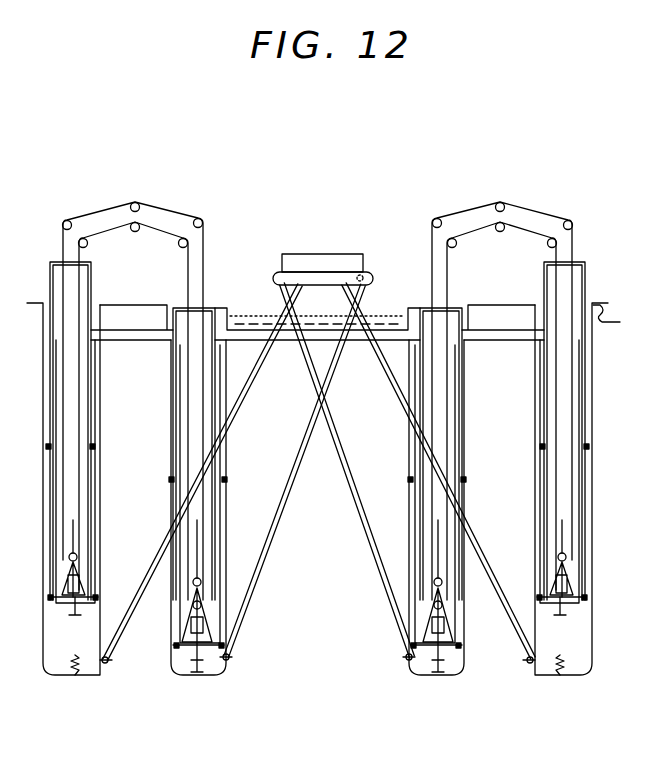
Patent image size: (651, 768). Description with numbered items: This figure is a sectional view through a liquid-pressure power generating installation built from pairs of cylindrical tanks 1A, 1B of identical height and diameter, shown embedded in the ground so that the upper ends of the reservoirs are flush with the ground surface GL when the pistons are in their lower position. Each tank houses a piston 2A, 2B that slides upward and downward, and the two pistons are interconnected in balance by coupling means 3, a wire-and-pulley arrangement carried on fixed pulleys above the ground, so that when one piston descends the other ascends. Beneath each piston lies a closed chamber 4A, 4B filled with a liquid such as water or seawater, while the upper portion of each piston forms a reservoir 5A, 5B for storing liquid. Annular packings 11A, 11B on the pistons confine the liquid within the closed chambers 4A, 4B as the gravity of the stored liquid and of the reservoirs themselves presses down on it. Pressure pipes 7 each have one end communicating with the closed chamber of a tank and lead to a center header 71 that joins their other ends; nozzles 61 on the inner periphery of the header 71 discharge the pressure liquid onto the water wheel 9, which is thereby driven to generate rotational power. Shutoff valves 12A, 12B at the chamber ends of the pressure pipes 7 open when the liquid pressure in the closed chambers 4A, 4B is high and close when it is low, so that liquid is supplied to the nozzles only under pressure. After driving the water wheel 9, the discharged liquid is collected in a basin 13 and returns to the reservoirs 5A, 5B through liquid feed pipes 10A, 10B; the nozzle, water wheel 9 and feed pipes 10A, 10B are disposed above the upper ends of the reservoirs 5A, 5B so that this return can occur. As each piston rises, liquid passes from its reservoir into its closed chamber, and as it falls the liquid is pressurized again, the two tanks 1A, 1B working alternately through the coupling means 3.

The coupling means 3 is at (140, 200).
The water wheel 9 is at (331, 215).
The nozzle 61 is at (352, 262).
The center header 71 is at (316, 252).
The pressure pipes 7 is at (376, 370).
The basin 13 is at (250, 322).
The liquid feed pipe 10A is at (107, 332).
The liquid feed pipe 10B is at (228, 312).
The reservoir 5A is at (50, 298).
The reservoir 5B is at (188, 300).
The closed chamber 4A is at (60, 665).
The closed chamber 4B is at (178, 665).
The tank 1A is at (43, 490).
The tank 1B is at (165, 488).
The piston 2A is at (62, 527).
The piston 2B is at (175, 530).
The annular packing 11A is at (46, 446).
The annular packing 11B is at (226, 478).
The shutoff valve 12A is at (105, 666).
The shutoff valve 12B is at (226, 663).
The ground surface GL is at (605, 326).